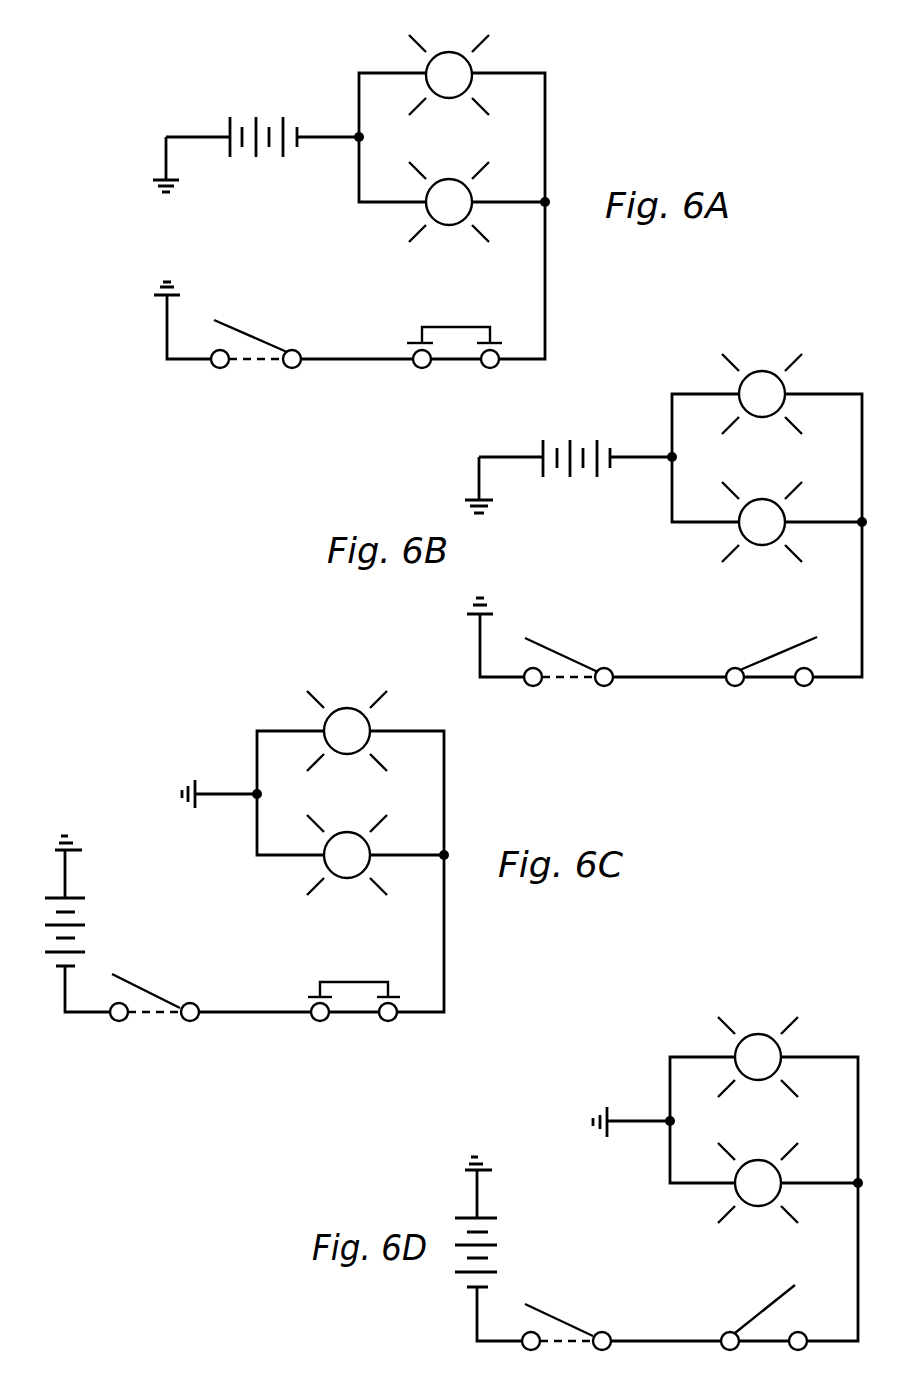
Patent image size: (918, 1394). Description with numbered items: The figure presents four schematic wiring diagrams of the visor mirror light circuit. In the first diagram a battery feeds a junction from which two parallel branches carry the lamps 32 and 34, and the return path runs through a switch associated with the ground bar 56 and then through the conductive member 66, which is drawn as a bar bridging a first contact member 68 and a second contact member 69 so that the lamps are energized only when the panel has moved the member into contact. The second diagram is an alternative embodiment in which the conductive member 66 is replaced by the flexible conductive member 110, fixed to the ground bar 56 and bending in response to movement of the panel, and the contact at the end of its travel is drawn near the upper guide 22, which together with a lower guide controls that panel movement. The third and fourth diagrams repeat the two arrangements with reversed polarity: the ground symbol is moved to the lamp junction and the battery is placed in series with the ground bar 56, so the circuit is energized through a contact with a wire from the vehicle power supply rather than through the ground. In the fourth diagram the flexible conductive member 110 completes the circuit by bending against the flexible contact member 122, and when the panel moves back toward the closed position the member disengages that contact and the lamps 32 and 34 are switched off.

In FIG. 6A, the lamp 32 is at (462, 67).
In FIG. 6B, the lamp 32 is at (778, 390).
In FIG. 6C, the lamp 32 is at (358, 728).
In FIG. 6D, the lamp 32 is at (775, 1053).
In FIG. 6A, the lamp 34 is at (450, 192).
In FIG. 6B, the lamp 34 is at (768, 510).
In FIG. 6C, the lamp 34 is at (365, 848).
In FIG. 6D, the lamp 34 is at (775, 1175).
In FIG. 6A, the ground bar 56 is at (260, 345).
In FIG. 6B, the ground bar 56 is at (575, 662).
In FIG. 6C, the ground bar 56 is at (162, 995).
In FIG. 6D, the ground bar 56 is at (575, 1325).
In FIG. 6A, the conductive member 66 is at (453, 337).
In FIG. 6C, the conductive member 66 is at (357, 987).
In FIG. 6A, the first contact member 68 is at (403, 355).
In FIG. 6C, the first contact member 68 is at (307, 1015).
In FIG. 6A, the second contact member 69 is at (505, 350).
In FIG. 6C, the second contact member 69 is at (405, 1010).
In FIG. 6B, the flexible conductive member 110 is at (773, 655).
In FIG. 6D, the flexible conductive member 110 is at (750, 1320).
In FIG. 6B, the upper guide 22 is at (797, 693).
In FIG. 6D, the flexible contact member 122 is at (800, 1352).